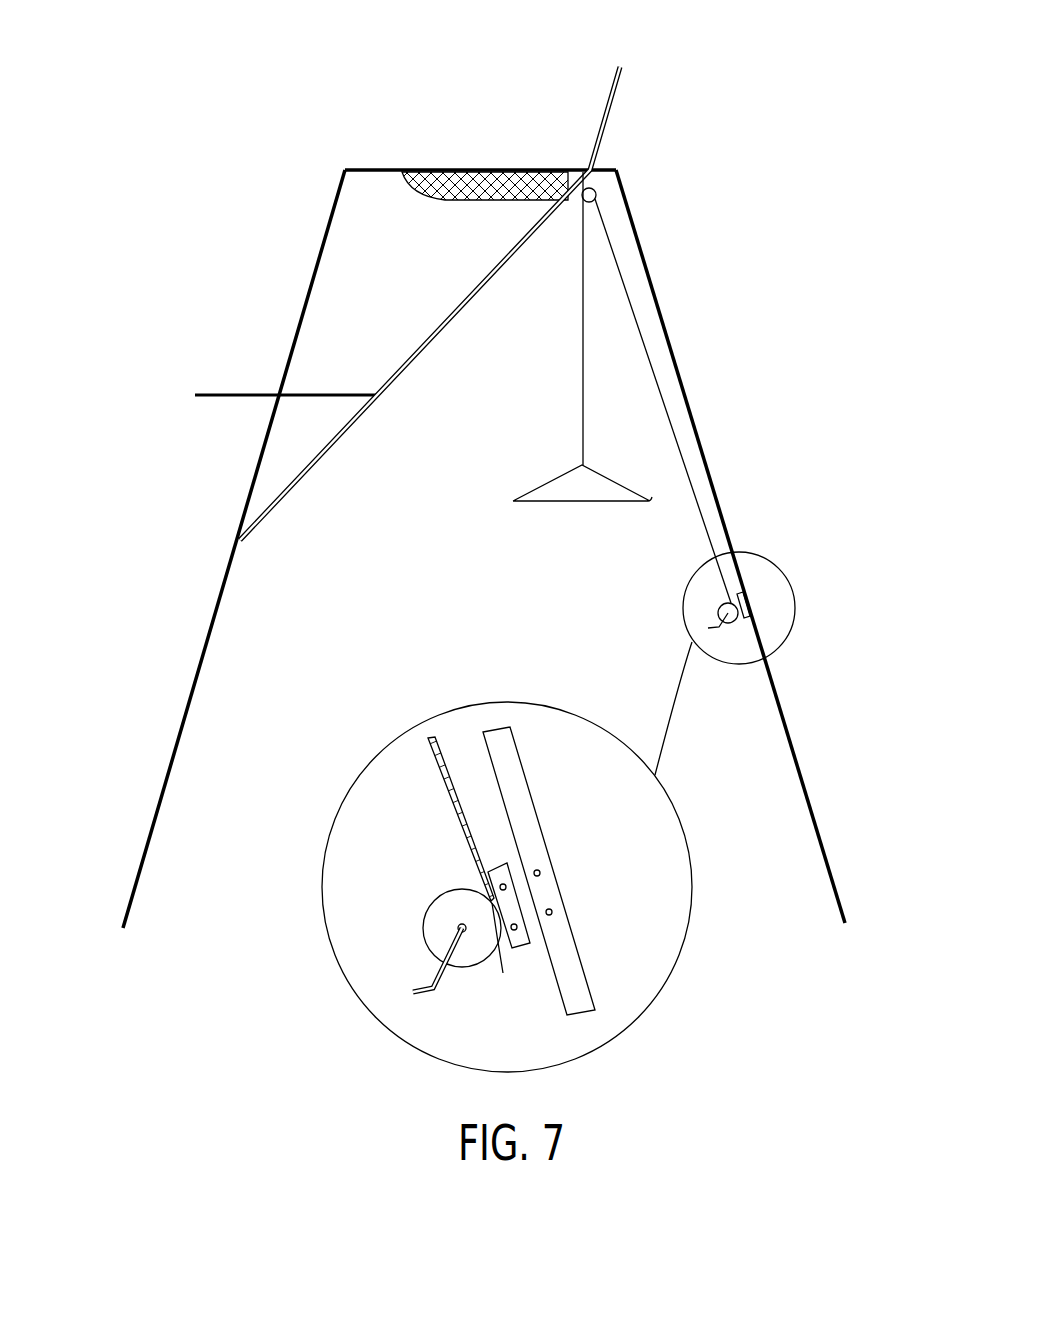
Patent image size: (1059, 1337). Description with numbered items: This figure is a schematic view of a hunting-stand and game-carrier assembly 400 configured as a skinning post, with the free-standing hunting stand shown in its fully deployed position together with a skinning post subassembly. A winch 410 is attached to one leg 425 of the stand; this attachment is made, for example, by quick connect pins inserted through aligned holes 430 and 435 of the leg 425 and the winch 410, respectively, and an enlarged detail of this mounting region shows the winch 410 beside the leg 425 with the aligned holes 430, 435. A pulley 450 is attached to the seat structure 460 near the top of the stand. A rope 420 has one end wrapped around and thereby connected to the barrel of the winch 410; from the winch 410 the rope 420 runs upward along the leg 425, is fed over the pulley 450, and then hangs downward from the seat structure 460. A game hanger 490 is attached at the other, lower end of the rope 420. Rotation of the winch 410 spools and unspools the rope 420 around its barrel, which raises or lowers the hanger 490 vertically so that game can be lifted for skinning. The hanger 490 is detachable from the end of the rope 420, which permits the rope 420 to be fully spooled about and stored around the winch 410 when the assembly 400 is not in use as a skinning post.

The hunting-stand and game-carrier assembly 400 is at (372, 88).
The winch 410 is at (440, 927).
The rope 420 is at (580, 353).
The leg 425 is at (688, 396).
The holes 430 is at (541, 873).
The holes 435 is at (512, 940).
The pulley 450 is at (597, 196).
The seat structure 460 is at (572, 163).
The game hanger 490 is at (540, 514).